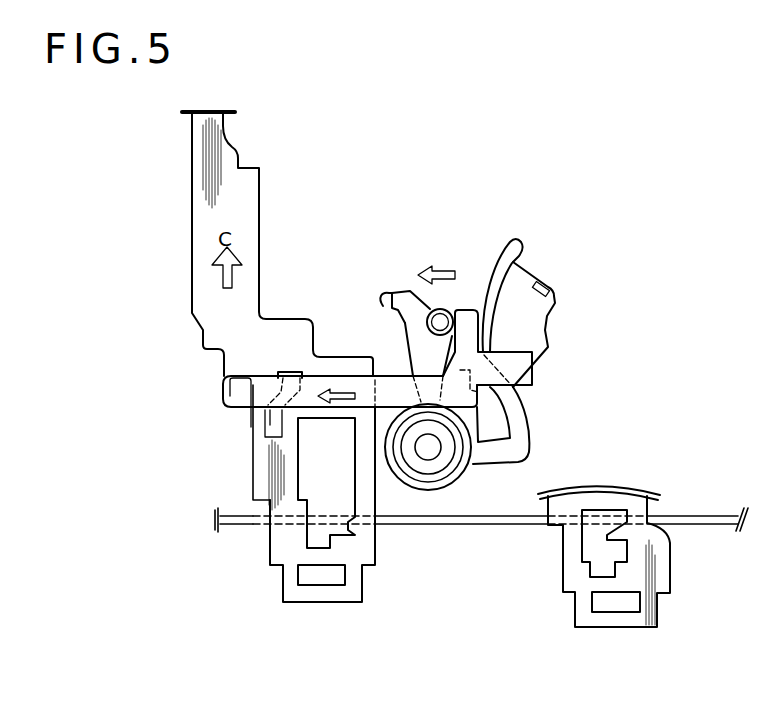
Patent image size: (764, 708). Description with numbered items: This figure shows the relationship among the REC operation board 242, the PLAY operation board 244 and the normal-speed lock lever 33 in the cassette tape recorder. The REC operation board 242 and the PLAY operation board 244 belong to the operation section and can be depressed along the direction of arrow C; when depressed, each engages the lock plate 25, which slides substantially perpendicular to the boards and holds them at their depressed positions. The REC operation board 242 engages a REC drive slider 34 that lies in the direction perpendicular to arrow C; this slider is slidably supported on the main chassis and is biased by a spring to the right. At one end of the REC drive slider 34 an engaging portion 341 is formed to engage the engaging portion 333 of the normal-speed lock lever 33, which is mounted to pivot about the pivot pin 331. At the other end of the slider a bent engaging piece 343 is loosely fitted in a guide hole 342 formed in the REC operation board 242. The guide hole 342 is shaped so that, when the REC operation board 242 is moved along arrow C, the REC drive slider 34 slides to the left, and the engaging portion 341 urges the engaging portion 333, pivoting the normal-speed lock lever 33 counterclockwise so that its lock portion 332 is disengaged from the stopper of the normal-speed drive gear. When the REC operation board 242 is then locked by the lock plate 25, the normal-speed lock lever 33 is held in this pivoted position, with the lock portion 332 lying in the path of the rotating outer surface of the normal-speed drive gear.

The lock plate 25 is at (471, 527).
The normal-speed lock lever 33 is at (405, 339).
The REC drive slider 34 is at (372, 366).
The REC operation board 242 is at (366, 586).
The PLAY operation board 244 is at (672, 575).
The pivot pin 331 is at (442, 450).
The lock portion 332 is at (548, 286).
The engaging portion 333 is at (410, 294).
The engaging portion 341 is at (462, 308).
The guide hole 342 is at (270, 373).
The bent engaging piece 343 is at (265, 436).